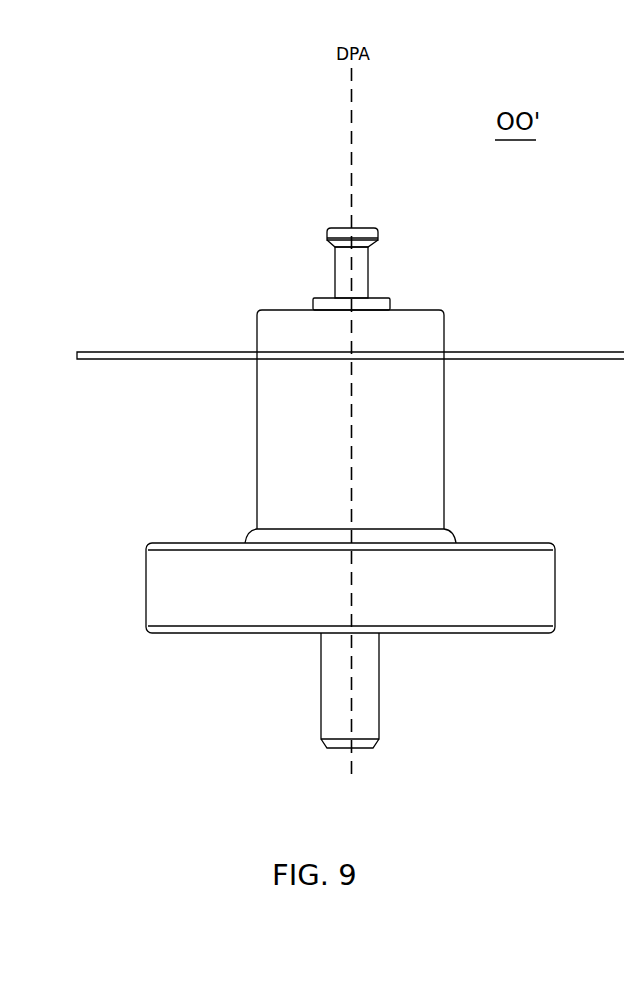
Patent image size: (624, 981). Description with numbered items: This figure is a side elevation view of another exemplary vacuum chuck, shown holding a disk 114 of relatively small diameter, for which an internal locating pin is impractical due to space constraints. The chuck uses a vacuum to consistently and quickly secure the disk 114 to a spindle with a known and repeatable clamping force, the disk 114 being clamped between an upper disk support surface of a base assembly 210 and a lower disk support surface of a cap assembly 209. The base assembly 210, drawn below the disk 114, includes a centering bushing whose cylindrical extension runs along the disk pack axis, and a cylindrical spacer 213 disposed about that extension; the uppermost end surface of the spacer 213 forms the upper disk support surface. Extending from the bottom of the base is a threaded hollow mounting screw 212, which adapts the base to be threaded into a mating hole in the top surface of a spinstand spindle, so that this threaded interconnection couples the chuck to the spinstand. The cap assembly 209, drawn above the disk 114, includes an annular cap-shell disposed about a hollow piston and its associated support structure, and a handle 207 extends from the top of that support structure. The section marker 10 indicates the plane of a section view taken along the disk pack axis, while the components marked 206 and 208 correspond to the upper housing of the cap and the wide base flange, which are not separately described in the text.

The section line 10 is at (352, 173).
The disk 114 is at (523, 350).
The upper housing 206 is at (440, 329).
The handle 207 is at (379, 235).
The flange 208 is at (547, 607).
The cap assembly 209 is at (120, 175).
The base assembly 210 is at (133, 738).
The threaded hollow mounting screw 212 is at (375, 698).
The cylindrical spacer 213 is at (434, 443).